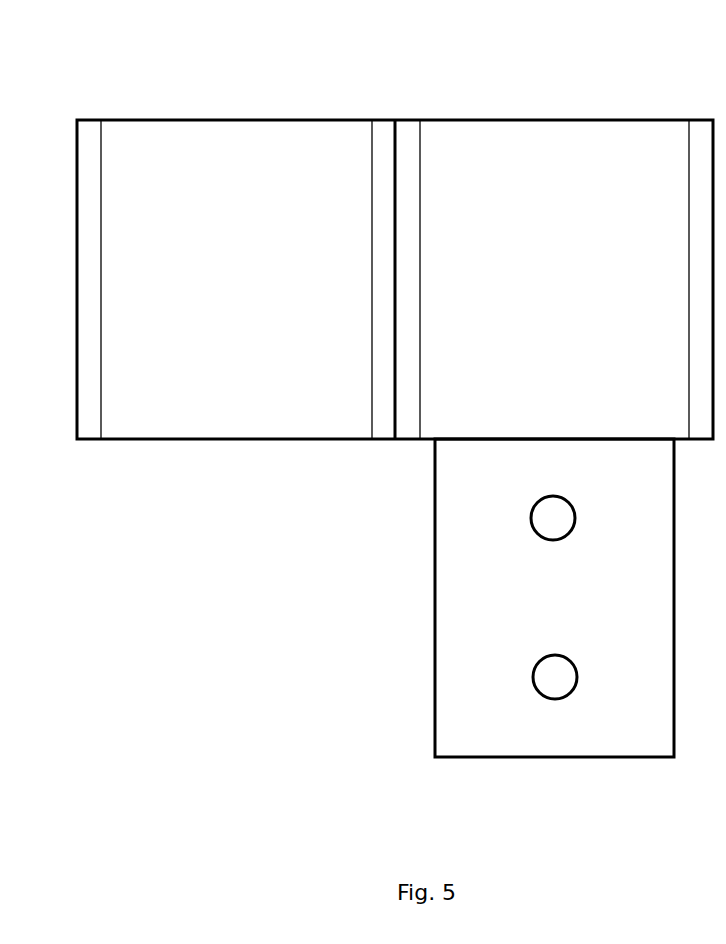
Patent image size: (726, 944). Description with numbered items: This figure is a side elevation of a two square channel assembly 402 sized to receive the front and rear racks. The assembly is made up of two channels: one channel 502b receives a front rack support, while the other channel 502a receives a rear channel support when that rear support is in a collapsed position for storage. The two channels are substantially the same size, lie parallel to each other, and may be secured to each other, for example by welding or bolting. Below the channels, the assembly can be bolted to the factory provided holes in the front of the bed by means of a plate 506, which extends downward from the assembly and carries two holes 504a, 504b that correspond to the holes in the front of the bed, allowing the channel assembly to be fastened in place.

The two square channel assembly 402 is at (185, 108).
The channel 502a is at (289, 305).
The channel 502b is at (607, 305).
The hole 504a is at (553, 518).
The hole 504b is at (553, 680).
The plate 506 is at (483, 602).